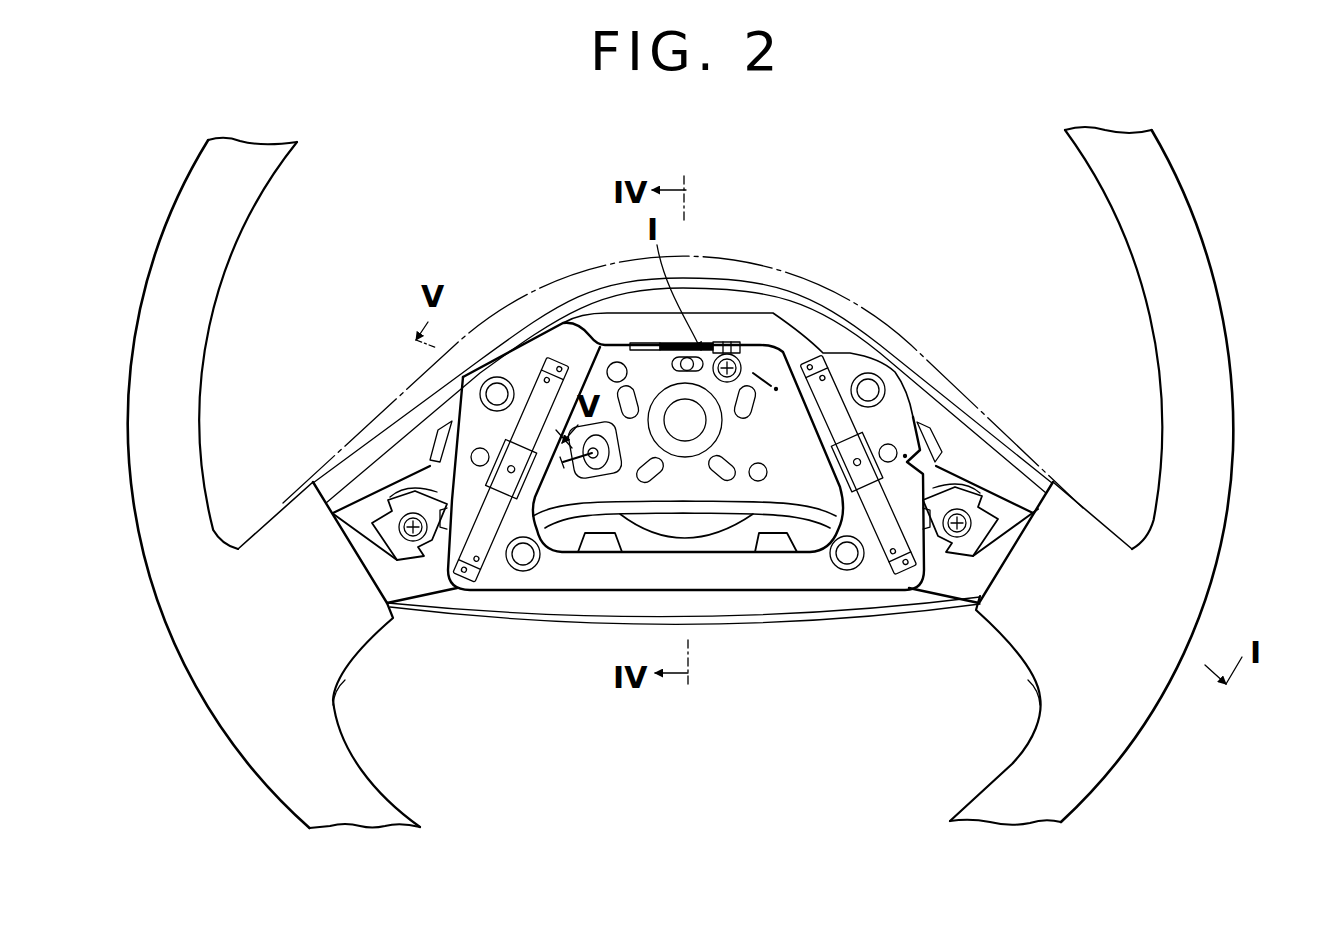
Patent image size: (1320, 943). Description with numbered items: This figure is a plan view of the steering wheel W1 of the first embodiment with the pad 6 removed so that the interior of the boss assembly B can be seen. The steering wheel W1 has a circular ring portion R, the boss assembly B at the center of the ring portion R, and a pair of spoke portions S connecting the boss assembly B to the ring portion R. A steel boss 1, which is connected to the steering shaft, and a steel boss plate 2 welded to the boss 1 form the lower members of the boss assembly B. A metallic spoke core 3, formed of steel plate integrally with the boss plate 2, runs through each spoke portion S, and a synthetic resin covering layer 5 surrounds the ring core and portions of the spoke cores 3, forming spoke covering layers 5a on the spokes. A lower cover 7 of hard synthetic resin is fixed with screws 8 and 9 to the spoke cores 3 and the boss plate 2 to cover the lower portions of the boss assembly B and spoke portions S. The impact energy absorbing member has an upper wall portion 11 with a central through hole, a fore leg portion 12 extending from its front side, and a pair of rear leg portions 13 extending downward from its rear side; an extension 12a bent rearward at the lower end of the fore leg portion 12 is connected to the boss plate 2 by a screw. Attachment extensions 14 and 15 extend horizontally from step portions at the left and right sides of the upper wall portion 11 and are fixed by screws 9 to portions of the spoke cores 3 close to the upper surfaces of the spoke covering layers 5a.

The boss 1 is at (718, 427).
The boss plate 2 is at (610, 347).
The metallic spoke core 3 is at (372, 518).
The covering layer 5 is at (1050, 722).
The spoke covering layer 5a is at (292, 511).
The pad 6 is at (530, 312).
The lower cover 7 is at (837, 340).
The screw 8 is at (742, 340).
The screw 9 is at (408, 545).
The upper wall portion 11 is at (752, 577).
The fore leg portion 12 is at (721, 340).
The extension 12a is at (742, 263).
The rear leg portion 13 is at (600, 552).
The attachment extension 14 is at (907, 578).
The attachment extension 15 is at (440, 552).
The boss assembly B is at (717, 628).
The ring portion R is at (1178, 202).
The spoke portion S is at (367, 690).
The steering wheel W1 is at (1112, 120).